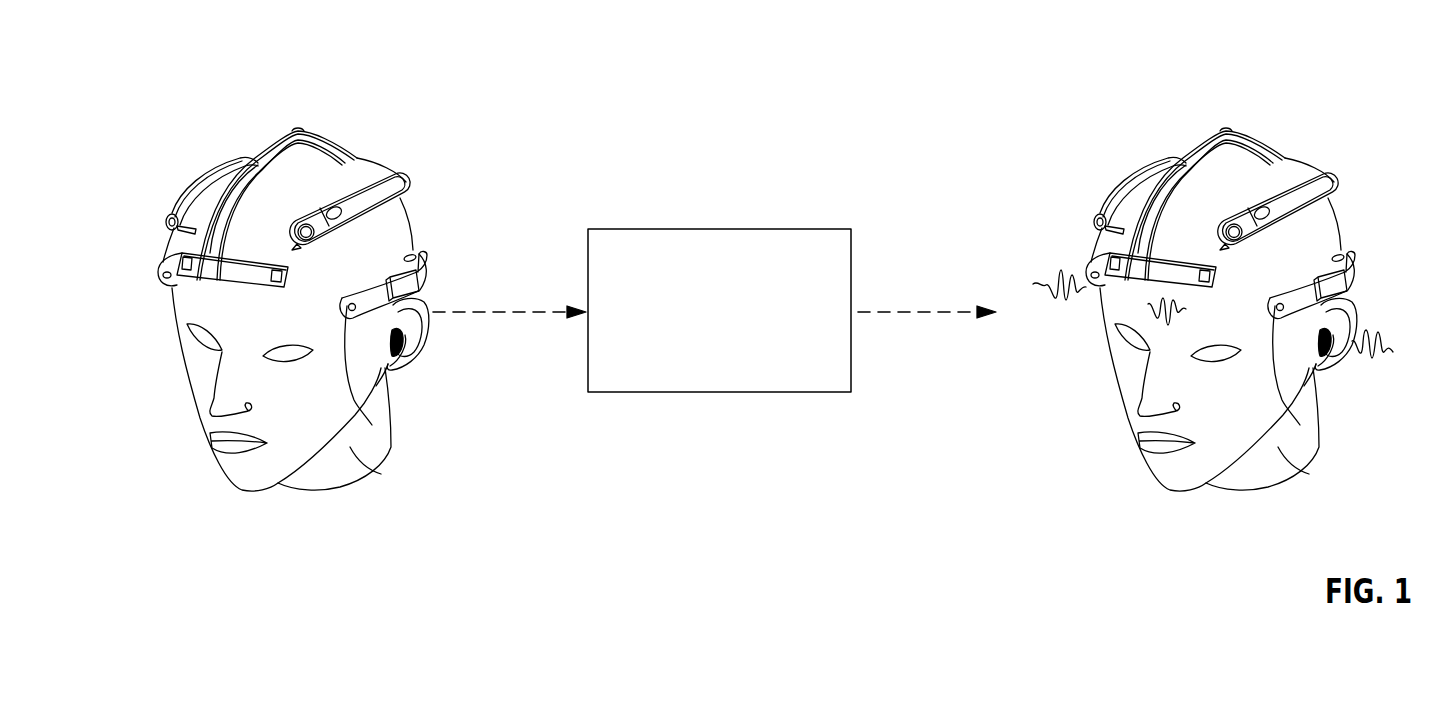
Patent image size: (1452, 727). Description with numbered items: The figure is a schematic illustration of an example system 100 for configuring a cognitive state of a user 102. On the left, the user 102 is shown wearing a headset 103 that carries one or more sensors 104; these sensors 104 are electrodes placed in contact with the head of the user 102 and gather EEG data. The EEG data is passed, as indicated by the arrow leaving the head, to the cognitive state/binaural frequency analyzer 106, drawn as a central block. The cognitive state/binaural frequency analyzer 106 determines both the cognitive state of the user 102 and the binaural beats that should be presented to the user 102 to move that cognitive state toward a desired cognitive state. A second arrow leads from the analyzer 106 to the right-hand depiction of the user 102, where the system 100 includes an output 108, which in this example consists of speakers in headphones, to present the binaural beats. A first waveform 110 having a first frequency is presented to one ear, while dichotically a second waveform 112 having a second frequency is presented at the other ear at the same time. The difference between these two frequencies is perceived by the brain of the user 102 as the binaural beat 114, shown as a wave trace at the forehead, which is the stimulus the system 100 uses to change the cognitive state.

The system 100 is at (176, 127).
The user 102 is at (352, 448).
The headset 103 is at (425, 275).
The sensors 104 is at (170, 216).
The cognitive state/binaural frequency analyzer 106 is at (735, 228).
The output 108 is at (404, 349).
The first waveform 110 is at (1060, 272).
The second waveform 112 is at (1358, 332).
The binaural beat 114 is at (1150, 313).